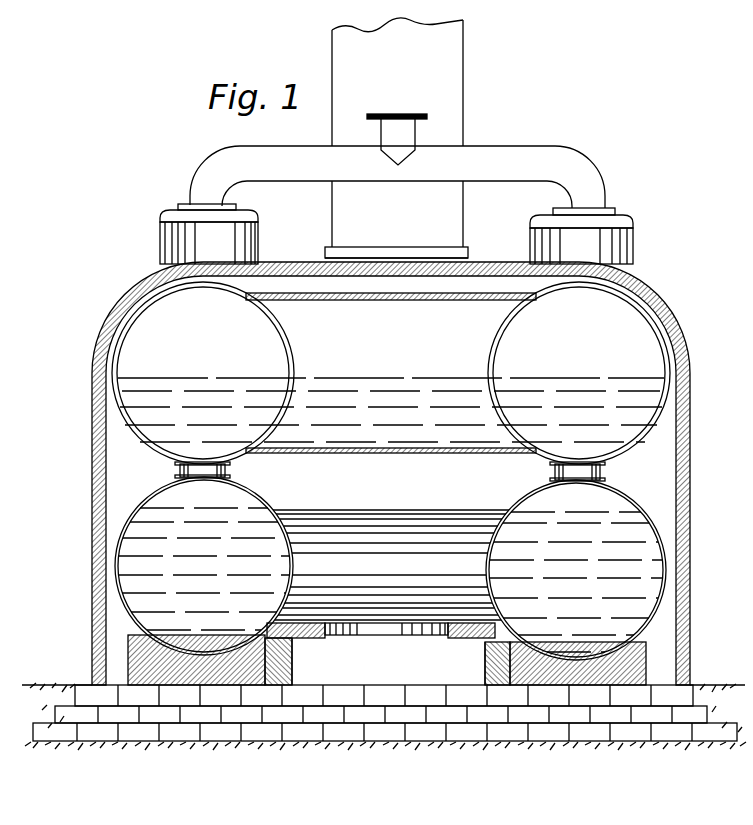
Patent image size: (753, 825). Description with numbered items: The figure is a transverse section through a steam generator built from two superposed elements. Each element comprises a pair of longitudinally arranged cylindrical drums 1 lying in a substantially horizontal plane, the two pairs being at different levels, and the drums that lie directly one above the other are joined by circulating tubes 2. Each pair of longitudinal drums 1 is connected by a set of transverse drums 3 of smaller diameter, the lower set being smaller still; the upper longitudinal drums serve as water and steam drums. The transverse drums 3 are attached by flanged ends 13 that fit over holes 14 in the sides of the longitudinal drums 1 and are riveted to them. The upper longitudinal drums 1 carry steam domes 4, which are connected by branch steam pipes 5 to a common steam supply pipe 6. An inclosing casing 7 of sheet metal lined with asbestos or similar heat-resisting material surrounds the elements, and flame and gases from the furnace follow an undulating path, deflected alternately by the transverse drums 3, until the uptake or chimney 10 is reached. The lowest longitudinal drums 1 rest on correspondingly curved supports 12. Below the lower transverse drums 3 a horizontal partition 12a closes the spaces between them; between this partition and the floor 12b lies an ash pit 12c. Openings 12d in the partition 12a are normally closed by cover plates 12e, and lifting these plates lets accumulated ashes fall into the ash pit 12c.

The longitudinal cylindrical drum 1 is at (391, 472).
The circulating tube 2 is at (178, 468).
The transverse drum 3 is at (391, 456).
The steam dome 4 is at (396, 234).
The branch steam pipe 5 is at (224, 150).
The steam supply pipe 6 is at (402, 136).
The inclosing casing 7 is at (92, 462).
The uptake or chimney 10 is at (396, 138).
The curved support 12 is at (147, 662).
The horizontal partition 12a is at (304, 638).
The floor 12b is at (436, 703).
The ash pit 12c is at (358, 678).
The opening 12d is at (425, 633).
The cover plate 12e is at (405, 624).
The flanged end 13 is at (270, 503).
The hole 14 is at (295, 350).